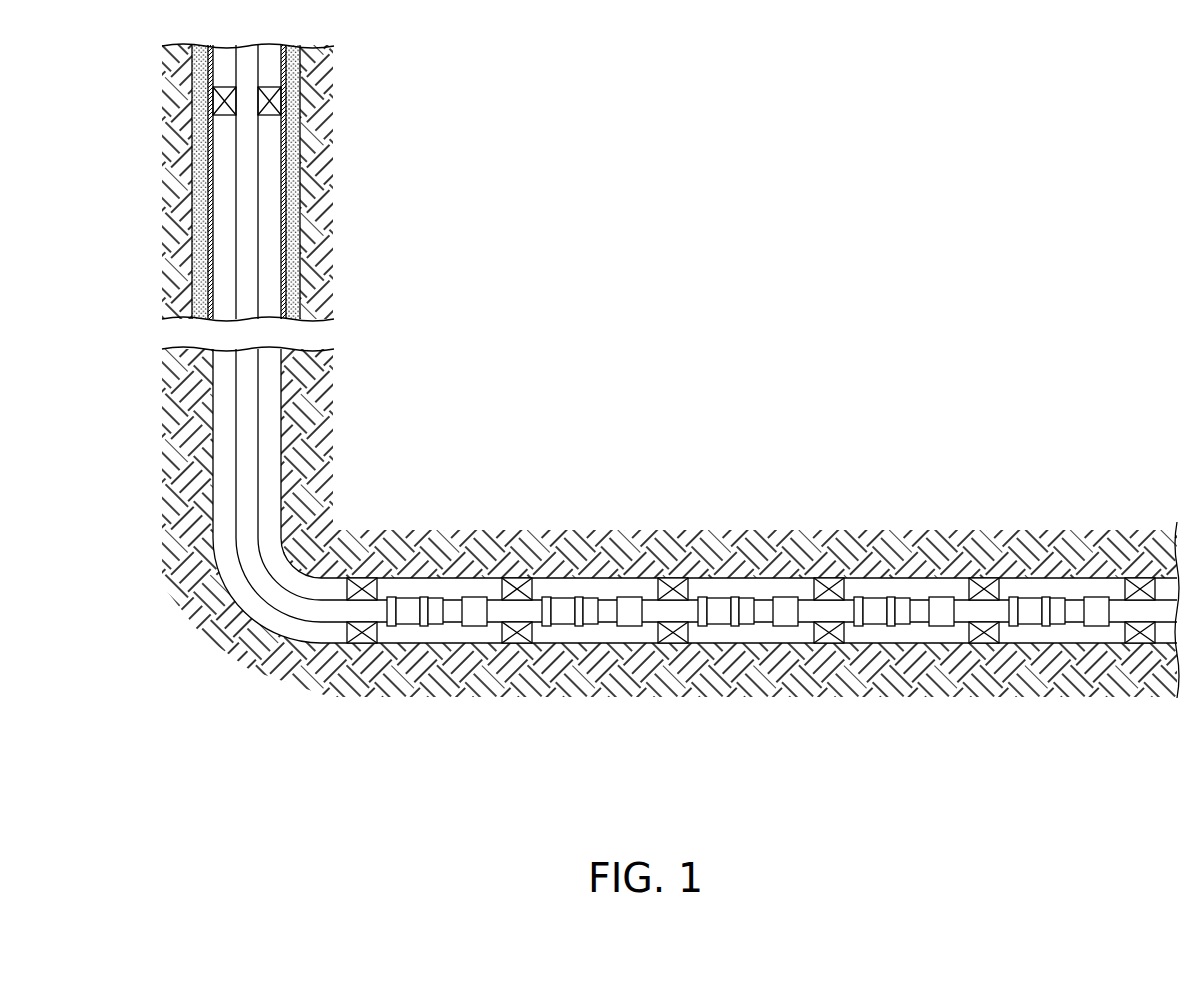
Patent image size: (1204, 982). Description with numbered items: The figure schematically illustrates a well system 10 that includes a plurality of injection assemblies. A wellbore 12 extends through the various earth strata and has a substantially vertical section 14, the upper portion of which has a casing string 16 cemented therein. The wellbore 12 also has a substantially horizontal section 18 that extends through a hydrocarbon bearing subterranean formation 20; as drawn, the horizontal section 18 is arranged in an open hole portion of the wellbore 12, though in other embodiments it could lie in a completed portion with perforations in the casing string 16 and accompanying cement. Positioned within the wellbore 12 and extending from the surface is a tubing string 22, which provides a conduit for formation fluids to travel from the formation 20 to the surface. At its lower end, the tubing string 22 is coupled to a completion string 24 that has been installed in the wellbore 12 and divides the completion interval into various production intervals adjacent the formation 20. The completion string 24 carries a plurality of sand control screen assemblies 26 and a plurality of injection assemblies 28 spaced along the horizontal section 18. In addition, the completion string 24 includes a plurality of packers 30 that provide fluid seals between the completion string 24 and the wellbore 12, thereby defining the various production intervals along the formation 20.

The well system 10 is at (480, 251).
The wellbore 12 is at (284, 403).
The substantially vertical section 14 is at (286, 369).
The casing string 16 is at (290, 219).
The substantially horizontal section 18 is at (600, 576).
The hydrocarbon bearing subterranean formation 20 is at (700, 565).
The tubing string 22 is at (261, 455).
The completion string 24 is at (450, 626).
The sand control screen assemblies 26 is at (424, 596).
The injection assemblies 28 is at (475, 596).
The packers 30 is at (516, 577).